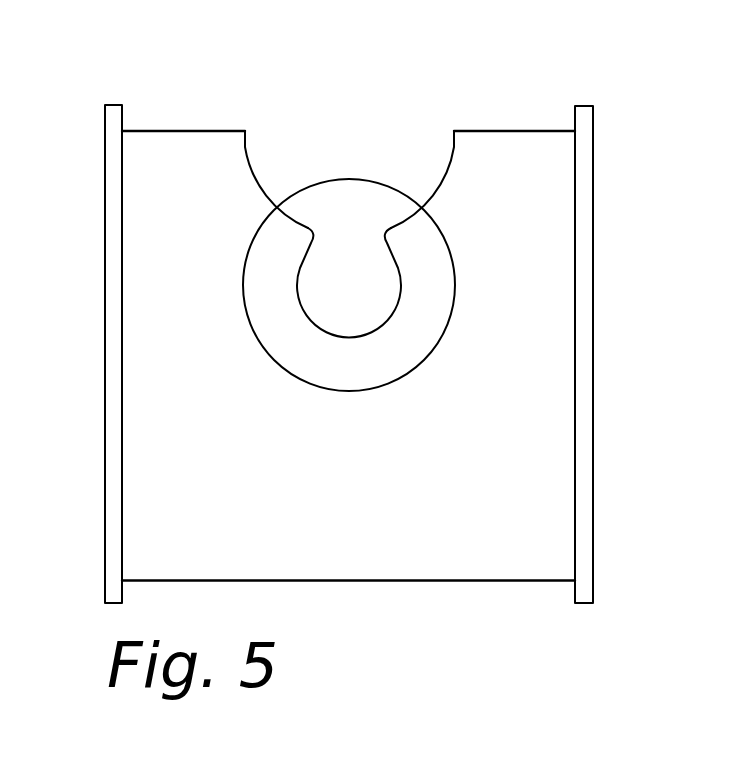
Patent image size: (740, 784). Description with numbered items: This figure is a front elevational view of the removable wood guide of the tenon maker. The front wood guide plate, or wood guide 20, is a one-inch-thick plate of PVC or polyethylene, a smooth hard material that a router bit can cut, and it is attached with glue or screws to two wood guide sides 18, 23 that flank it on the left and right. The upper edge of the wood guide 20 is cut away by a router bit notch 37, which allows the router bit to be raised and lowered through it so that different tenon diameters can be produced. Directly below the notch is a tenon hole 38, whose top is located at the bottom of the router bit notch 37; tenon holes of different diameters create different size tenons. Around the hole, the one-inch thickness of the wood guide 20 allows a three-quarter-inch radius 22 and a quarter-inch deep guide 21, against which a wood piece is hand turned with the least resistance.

The wood guide side 18 is at (590, 402).
The wood guide 20 is at (423, 550).
The guide 21 is at (300, 305).
The radius 22 is at (433, 317).
The wood guide side 23 is at (110, 297).
The router bit notch 37 is at (241, 147).
The tenon hole 38 is at (362, 305).